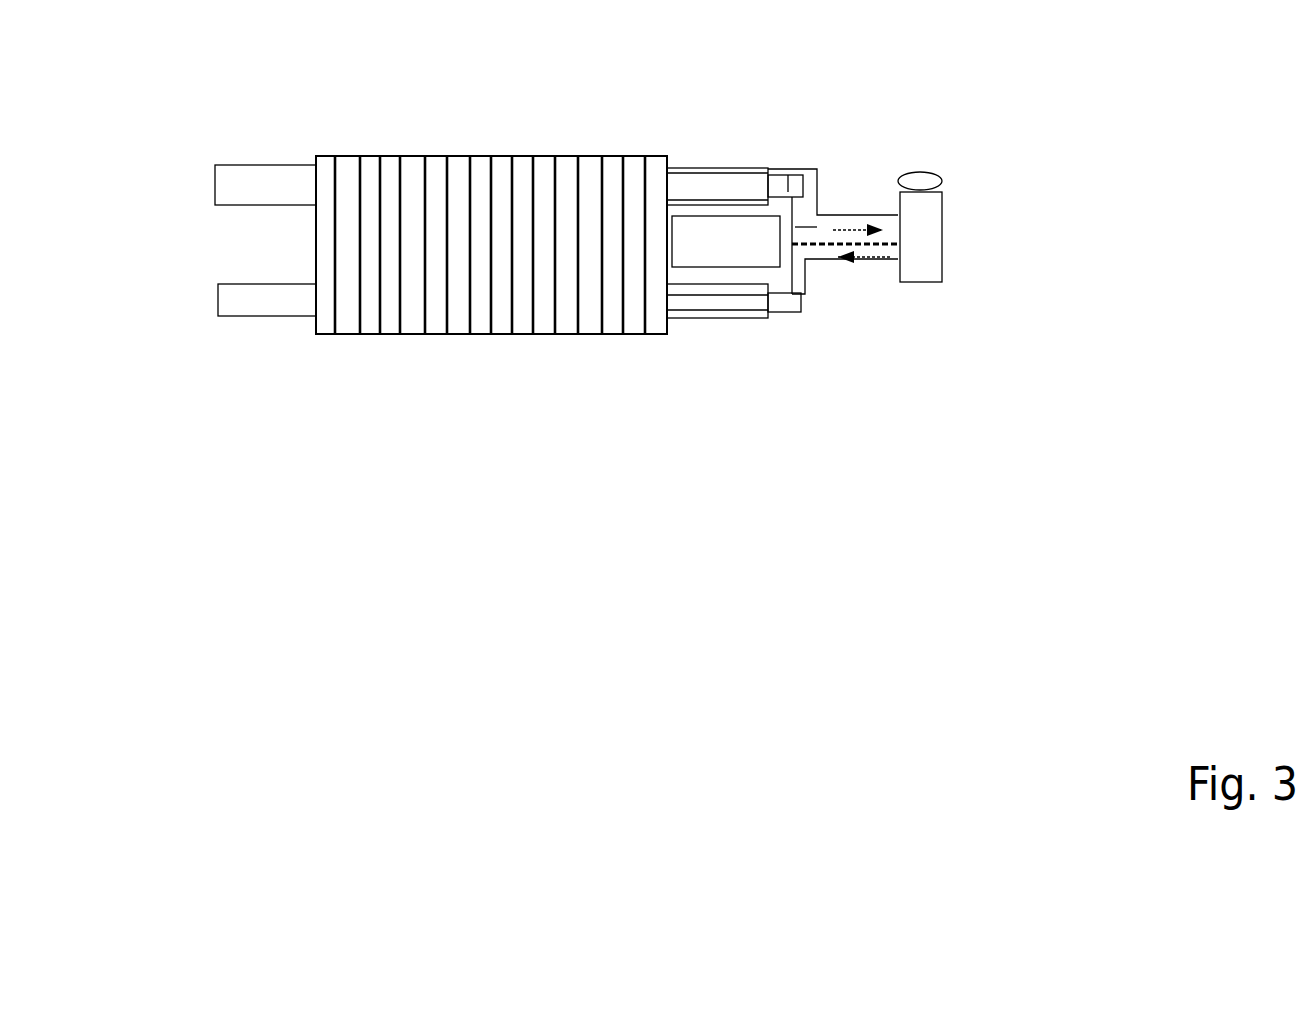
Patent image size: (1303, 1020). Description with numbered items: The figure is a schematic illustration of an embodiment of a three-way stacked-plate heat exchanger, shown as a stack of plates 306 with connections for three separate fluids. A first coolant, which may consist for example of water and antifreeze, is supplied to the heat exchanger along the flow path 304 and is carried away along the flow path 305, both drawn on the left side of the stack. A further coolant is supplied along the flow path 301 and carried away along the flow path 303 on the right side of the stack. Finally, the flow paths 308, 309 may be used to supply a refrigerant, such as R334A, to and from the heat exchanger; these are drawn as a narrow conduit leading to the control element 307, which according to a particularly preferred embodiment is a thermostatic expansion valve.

The flow path 301 is at (688, 148).
The flow path 303 is at (743, 333).
The flow path 304 is at (183, 188).
The flow path 305 is at (172, 302).
The heat exchanger block 306 is at (490, 173).
The control element 307 is at (930, 230).
The flow path 308 is at (852, 248).
The flow path 309 is at (862, 210).